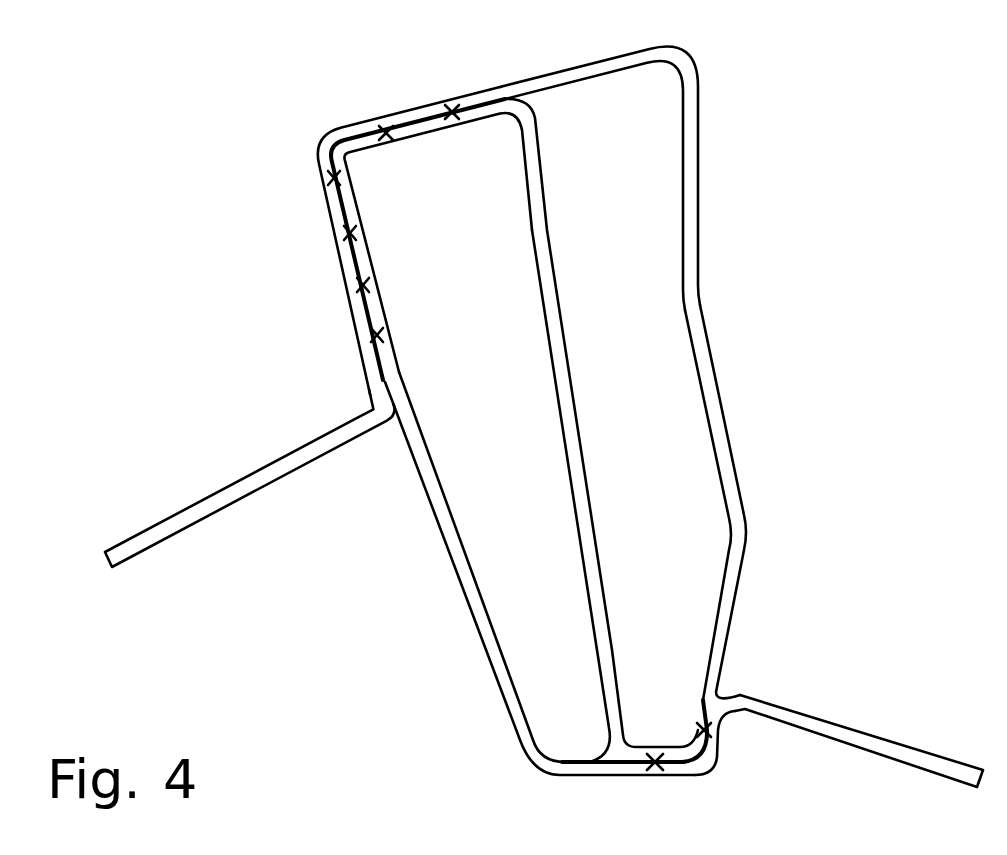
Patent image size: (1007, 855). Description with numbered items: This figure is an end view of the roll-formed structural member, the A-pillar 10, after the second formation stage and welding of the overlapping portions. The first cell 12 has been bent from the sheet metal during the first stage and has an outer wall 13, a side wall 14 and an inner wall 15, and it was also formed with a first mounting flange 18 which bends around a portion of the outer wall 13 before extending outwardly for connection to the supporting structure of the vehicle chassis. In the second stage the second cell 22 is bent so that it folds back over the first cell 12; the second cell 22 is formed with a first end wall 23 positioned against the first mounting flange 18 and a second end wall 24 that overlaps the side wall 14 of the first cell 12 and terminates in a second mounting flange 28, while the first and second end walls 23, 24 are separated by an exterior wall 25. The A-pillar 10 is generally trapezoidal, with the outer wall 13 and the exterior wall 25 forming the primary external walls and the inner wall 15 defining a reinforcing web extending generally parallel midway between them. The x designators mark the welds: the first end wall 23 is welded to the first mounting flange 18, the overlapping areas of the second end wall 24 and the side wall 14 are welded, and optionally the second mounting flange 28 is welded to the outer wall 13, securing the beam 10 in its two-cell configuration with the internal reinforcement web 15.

The A-pillar 10 is at (748, 445).
The first cell 12 is at (333, 130).
The outer wall 13 is at (467, 568).
The side wall 14 is at (424, 140).
The inner wall 15 is at (542, 224).
The first mounting flange 18 is at (863, 733).
The second cell 22 is at (720, 127).
The first end wall 23 is at (656, 755).
The second end wall 24 is at (478, 92).
The exterior wall 25 is at (705, 335).
The second mounting flange 28 is at (250, 482).